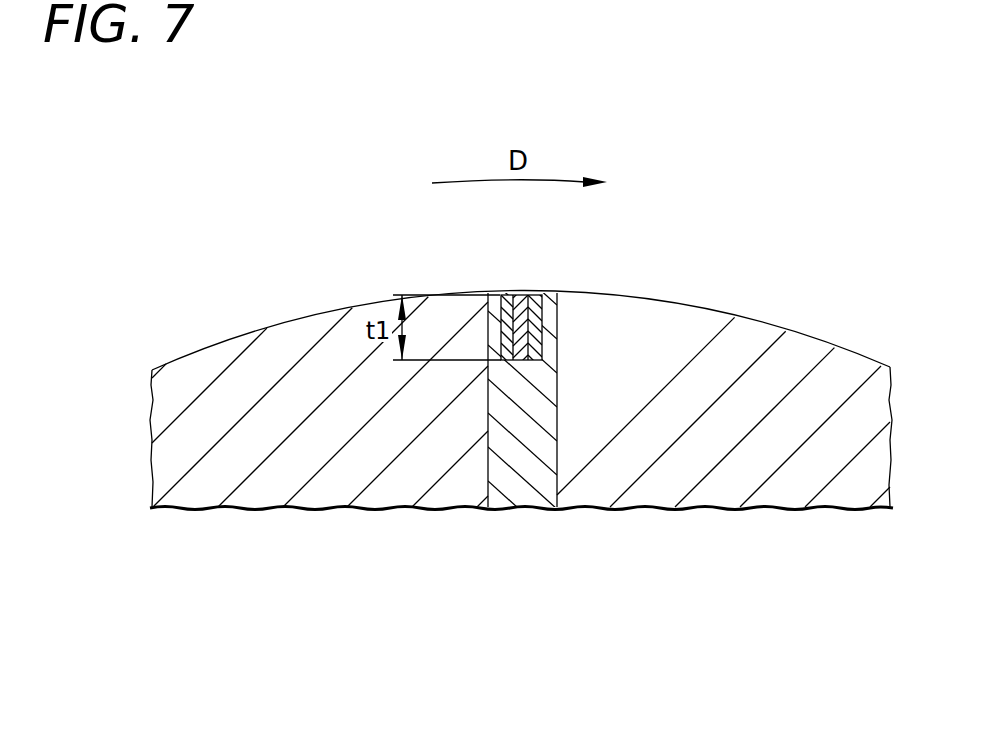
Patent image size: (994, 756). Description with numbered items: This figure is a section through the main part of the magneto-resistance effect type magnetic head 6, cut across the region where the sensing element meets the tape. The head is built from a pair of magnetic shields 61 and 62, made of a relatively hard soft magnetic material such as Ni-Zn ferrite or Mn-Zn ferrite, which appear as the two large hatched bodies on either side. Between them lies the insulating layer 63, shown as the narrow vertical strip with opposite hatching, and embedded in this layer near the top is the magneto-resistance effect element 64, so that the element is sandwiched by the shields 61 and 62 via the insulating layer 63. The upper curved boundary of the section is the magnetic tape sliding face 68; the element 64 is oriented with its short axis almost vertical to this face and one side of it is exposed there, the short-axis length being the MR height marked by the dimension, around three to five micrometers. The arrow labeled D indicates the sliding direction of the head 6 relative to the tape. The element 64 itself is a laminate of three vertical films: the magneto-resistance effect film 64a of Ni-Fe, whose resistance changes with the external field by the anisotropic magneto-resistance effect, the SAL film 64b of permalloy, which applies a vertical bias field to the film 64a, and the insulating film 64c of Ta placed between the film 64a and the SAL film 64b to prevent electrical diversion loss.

The magneto-resistance effect type magnetic head 6 is at (709, 272).
The magnetic shield 61 is at (338, 487).
The magnetic shield 62 is at (723, 485).
The insulating layer 63 is at (523, 487).
The magneto-resistance effect element 64 is at (547, 281).
The magneto-resistance effect film 64a is at (537, 294).
The SAL film 64b is at (512, 294).
The insulating film 64c is at (524, 294).
The magnetic tape sliding face 68 is at (765, 318).